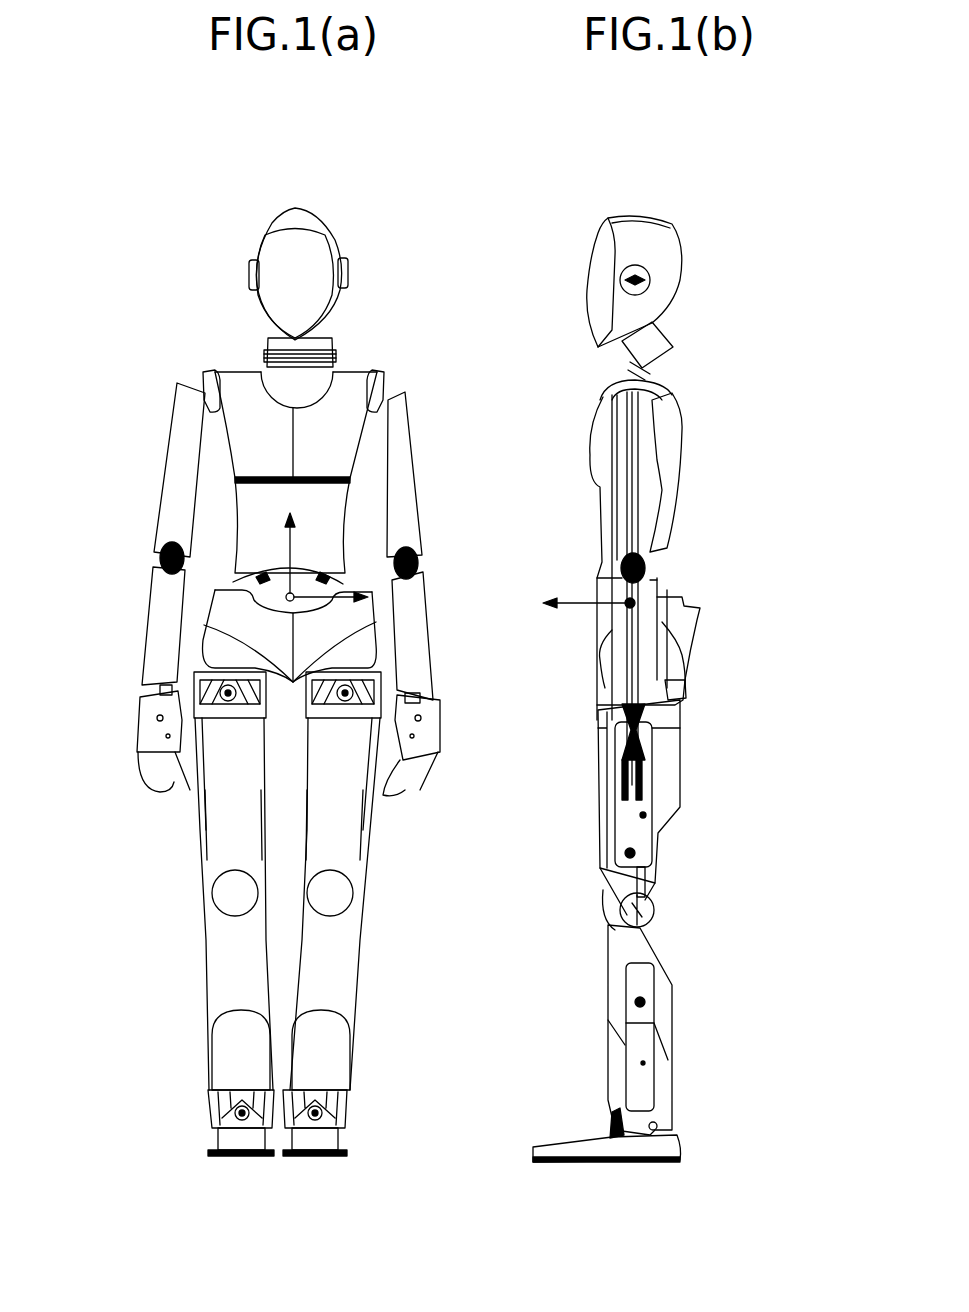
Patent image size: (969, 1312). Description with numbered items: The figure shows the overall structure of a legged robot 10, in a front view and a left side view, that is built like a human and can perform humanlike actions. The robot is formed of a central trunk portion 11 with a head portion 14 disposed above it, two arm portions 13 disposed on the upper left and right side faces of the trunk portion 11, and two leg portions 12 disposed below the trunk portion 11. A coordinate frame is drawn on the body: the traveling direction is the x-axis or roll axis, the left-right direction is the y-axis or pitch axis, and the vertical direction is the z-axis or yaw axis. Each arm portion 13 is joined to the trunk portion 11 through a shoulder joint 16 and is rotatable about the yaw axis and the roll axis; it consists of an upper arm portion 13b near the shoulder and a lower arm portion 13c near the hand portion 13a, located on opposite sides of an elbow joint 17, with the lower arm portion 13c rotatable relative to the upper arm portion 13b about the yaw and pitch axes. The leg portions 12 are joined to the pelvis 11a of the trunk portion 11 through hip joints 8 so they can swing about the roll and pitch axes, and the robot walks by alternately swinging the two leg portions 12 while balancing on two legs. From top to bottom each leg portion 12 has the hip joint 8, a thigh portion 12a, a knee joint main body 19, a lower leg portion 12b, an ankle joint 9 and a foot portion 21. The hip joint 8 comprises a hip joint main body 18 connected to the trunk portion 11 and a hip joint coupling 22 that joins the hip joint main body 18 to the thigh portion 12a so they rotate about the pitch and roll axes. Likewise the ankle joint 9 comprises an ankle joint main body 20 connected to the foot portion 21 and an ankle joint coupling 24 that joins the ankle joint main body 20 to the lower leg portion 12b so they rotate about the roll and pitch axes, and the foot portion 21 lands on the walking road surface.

In FIG. 1A, the hip joint 8 is at (525, 682).
In FIG. 1A, the ankle joint 9 is at (336, 1153).
In FIG. 1B, the ankle joint 9 is at (607, 1163).
In FIG. 1A, the legged robot 10 is at (340, 208).
In FIG. 1B, the legged robot 10 is at (700, 216).
In FIG. 1A, the trunk portion 11 is at (322, 517).
In FIG. 1B, the trunk portion 11 is at (657, 533).
In FIG. 1A, the pelvis 11a is at (360, 648).
In FIG. 1B, the pelvis 11a is at (677, 668).
In FIG. 1A, the leg portion 12 is at (286, 904).
In FIG. 1B, the leg portion 12 is at (597, 917).
In FIG. 1A, the thigh portion 12a is at (352, 825).
In FIG. 1B, the thigh portion 12a is at (606, 835).
In FIG. 1A, the lower leg portion 12b is at (327, 1063).
In FIG. 1B, the lower leg portion 12b is at (615, 1045).
In FIG. 1A, the arm portion 13 is at (280, 548).
In FIG. 1B, the arm portion 13 is at (696, 546).
In FIG. 1A, the hand portion 13a is at (280, 742).
In FIG. 1A, the upper arm portion 13b is at (178, 495).
In FIG. 1B, the upper arm portion 13b is at (657, 505).
In FIG. 1A, the lower arm portion 13c is at (165, 622).
In FIG. 1B, the lower arm portion 13c is at (650, 647).
In FIG. 1A, the head portion 14 is at (335, 232).
In FIG. 1B, the head portion 14 is at (665, 287).
In FIG. 1A, the shoulder joint 16 is at (208, 395).
In FIG. 1B, the shoulder joint 16 is at (667, 372).
In FIG. 1A, the elbow joint 17 is at (160, 560).
In FIG. 1B, the elbow joint 17 is at (640, 565).
In FIG. 1A, the hip joint main body 18 is at (418, 697).
In FIG. 1A, the knee joint main body 19 is at (345, 890).
In FIG. 1B, the knee joint main body 19 is at (612, 907).
In FIG. 1A, the ankle joint main body 20 is at (330, 1131).
In FIG. 1A, the foot portion 21 is at (318, 1158).
In FIG. 1B, the foot portion 21 is at (605, 1165).
In FIG. 1A, the hip joint coupling 22 is at (437, 744).
In FIG. 1A, the ankle joint coupling 24 is at (347, 1108).